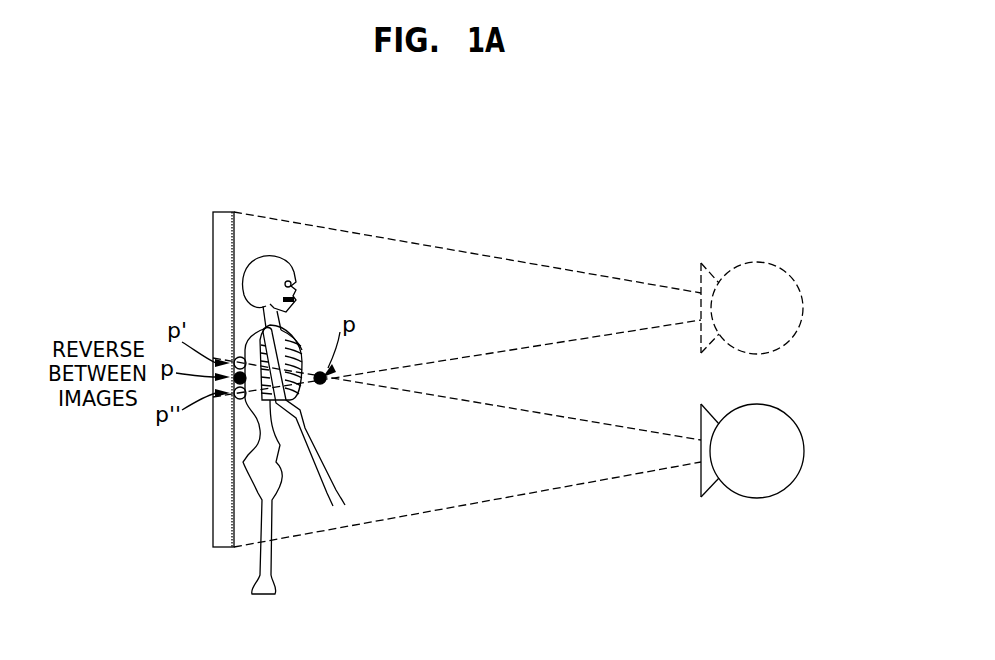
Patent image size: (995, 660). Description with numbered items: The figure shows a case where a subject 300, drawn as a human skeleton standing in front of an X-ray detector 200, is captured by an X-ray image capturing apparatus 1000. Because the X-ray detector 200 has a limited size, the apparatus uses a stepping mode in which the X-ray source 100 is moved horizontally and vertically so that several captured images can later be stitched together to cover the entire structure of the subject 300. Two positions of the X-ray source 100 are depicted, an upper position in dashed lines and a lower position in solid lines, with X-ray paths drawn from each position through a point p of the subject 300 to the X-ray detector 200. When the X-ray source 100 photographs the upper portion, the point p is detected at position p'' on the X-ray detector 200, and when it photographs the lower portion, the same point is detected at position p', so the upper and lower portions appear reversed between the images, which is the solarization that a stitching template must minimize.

The X-ray source 100 is at (804, 451).
The X-ray detector 200 is at (168, 394).
The subject 300 is at (272, 570).
The X-ray image capturing apparatus 1000 is at (714, 162).